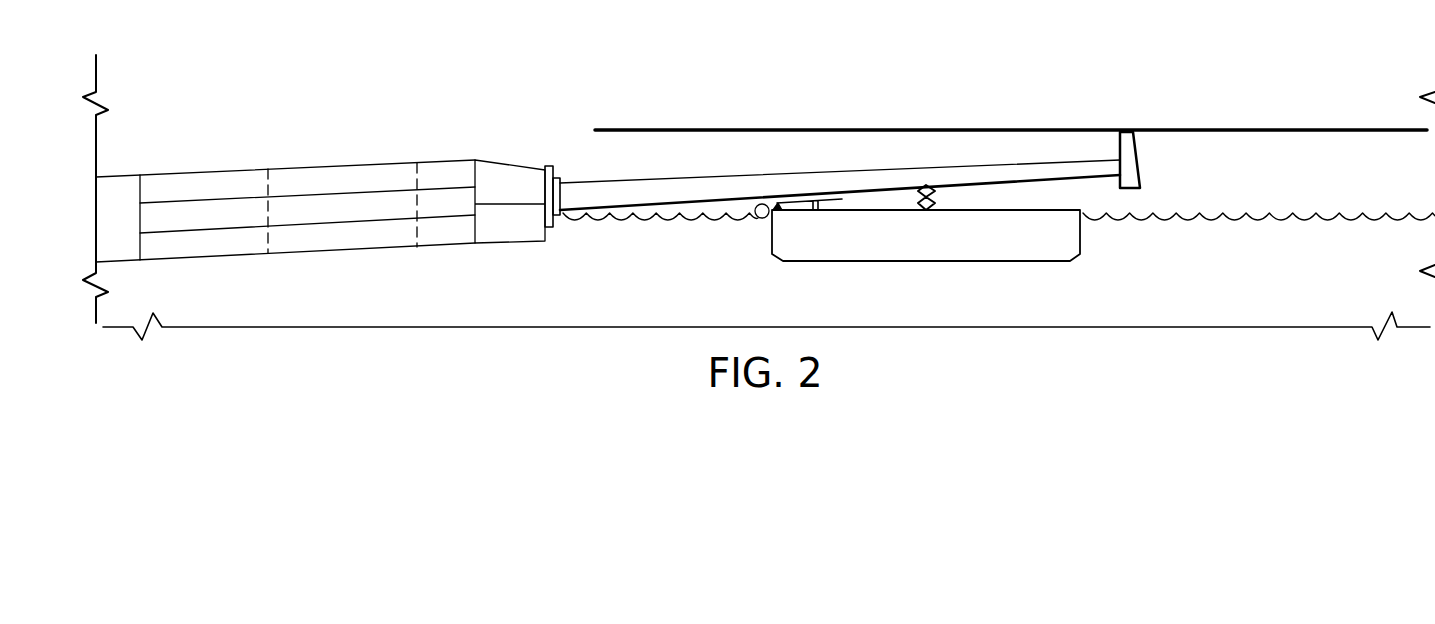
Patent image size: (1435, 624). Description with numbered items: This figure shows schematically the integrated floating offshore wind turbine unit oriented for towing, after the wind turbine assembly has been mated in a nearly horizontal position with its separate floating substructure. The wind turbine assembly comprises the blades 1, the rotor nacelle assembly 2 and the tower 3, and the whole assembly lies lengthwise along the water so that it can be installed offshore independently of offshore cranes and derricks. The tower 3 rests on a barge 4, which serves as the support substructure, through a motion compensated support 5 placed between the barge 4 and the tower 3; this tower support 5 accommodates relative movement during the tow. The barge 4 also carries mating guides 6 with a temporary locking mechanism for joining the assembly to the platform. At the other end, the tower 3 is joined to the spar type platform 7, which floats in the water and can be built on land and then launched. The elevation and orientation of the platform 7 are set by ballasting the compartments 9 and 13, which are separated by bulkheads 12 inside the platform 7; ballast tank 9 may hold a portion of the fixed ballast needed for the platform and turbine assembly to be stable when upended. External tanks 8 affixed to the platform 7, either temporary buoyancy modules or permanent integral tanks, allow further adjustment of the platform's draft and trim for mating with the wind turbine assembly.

The blades 1 is at (1240, 130).
The rotor nacelle assembly 2 is at (1138, 170).
The tower 3 is at (587, 192).
The barge 4 is at (925, 262).
The motion compensated support 5 is at (938, 198).
The mating guides 6 is at (758, 216).
The spar type platform 7 is at (331, 161).
The external tanks 8 is at (512, 233).
The ballast tank 9 is at (120, 250).
The bulkheads 12 is at (267, 188).
The ballast tank 13 is at (203, 182).